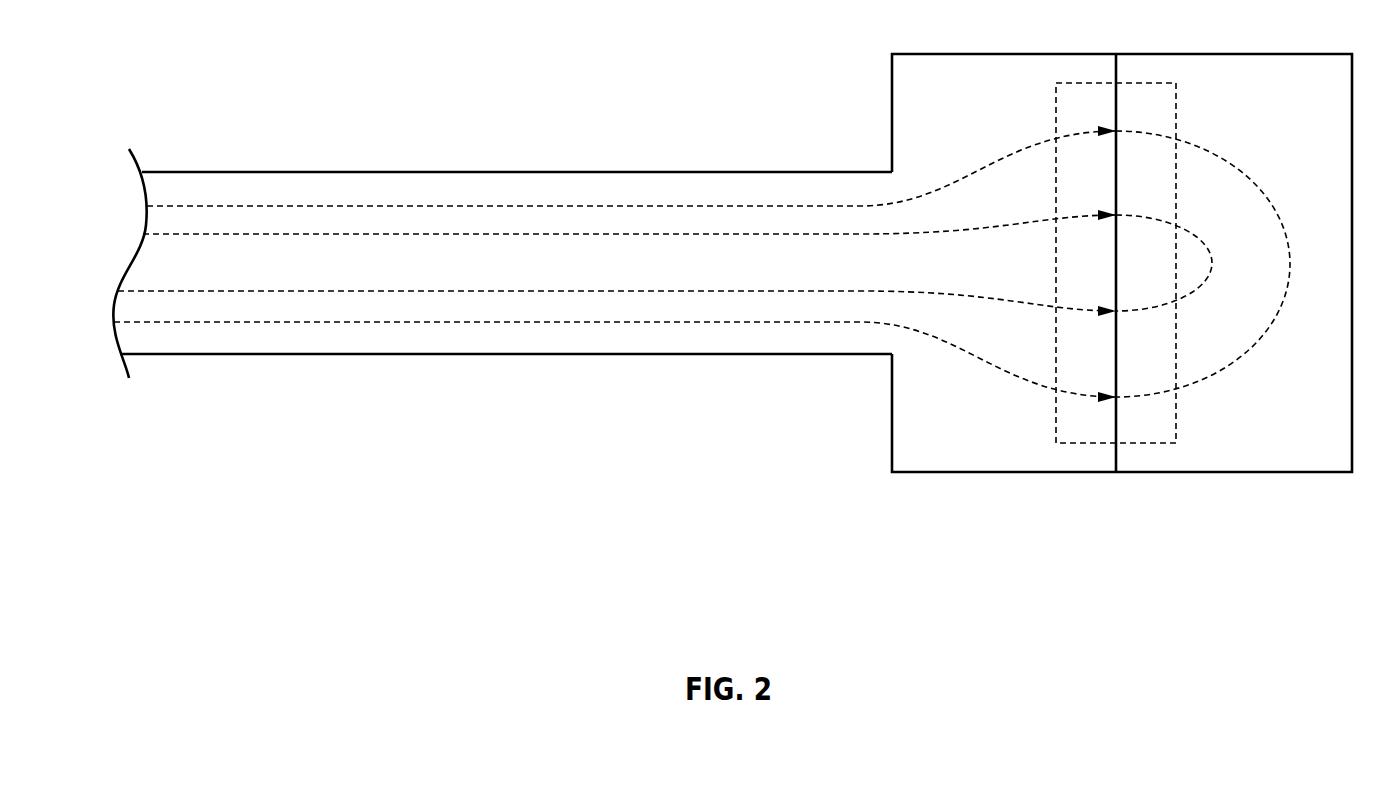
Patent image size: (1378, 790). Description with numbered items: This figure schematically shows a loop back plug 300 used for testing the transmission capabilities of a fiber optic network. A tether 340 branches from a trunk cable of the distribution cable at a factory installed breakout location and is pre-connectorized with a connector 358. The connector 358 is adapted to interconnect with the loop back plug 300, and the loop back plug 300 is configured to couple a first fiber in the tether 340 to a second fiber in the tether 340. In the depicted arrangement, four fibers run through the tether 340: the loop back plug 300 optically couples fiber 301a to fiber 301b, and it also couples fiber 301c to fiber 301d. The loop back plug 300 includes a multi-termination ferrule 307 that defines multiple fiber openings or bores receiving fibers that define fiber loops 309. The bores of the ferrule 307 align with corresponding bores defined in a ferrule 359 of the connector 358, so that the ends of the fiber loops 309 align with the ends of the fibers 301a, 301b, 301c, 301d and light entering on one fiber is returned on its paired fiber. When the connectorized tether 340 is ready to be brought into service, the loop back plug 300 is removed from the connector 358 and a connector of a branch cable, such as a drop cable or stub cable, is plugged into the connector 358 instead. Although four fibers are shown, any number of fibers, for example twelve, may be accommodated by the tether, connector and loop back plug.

The loop back plug 300 is at (1128, 291).
The connector 358 is at (968, 54).
The tether 340 is at (378, 172).
The fiber 301a is at (488, 205).
The fiber 301b is at (610, 235).
The fiber 301c is at (442, 291).
The fiber 301d is at (580, 322).
The fiber loop 309 is at (1227, 162).
The ferrule 359 is at (1063, 443).
The multi-termination (MT) ferrule 307 is at (1155, 443).